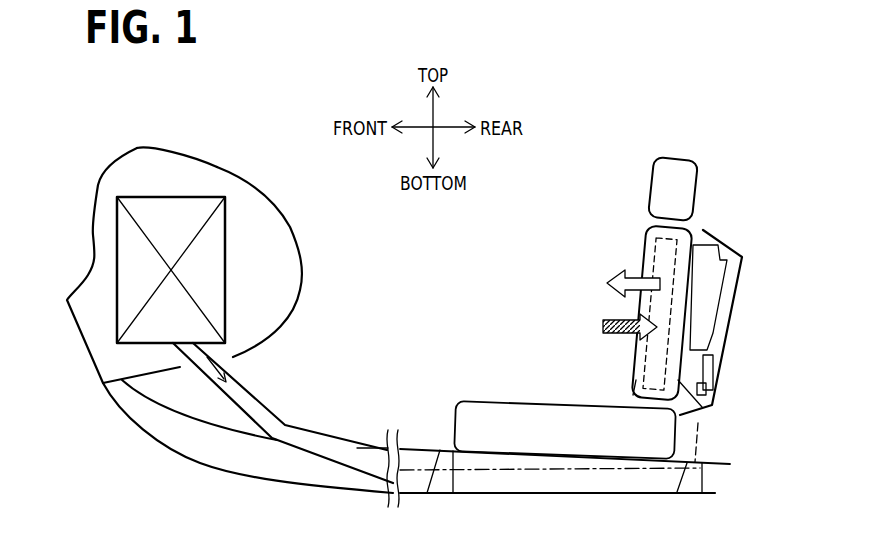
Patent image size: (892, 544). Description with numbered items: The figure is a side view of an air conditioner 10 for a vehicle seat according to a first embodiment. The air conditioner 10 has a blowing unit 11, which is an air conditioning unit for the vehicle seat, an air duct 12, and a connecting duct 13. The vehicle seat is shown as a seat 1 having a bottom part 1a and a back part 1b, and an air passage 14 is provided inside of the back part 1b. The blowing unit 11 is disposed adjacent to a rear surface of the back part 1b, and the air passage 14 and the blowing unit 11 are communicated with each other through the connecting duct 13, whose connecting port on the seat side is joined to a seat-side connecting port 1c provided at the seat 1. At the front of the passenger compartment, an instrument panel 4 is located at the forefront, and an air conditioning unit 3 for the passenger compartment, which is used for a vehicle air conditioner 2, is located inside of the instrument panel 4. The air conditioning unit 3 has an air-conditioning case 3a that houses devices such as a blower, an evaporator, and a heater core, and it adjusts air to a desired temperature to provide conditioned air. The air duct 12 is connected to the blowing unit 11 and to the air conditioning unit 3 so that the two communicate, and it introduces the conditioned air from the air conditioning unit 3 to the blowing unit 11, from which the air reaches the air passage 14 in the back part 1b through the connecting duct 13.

The seat 1 is at (629, 280).
The bottom part 1a is at (500, 407).
The back part 1b is at (627, 368).
The seat-side connecting port 1c is at (693, 420).
The vehicle air conditioner 2 is at (167, 174).
The air conditioning unit 3 is at (178, 223).
The air-conditioning case 3a is at (212, 197).
The instrument panel 4 is at (277, 202).
The air conditioner for a vehicle seat 10 is at (628, 309).
The blowing unit 11 is at (727, 250).
The air duct 12 is at (227, 395).
The connecting duct 13 is at (713, 358).
The air passage 14 is at (642, 253).